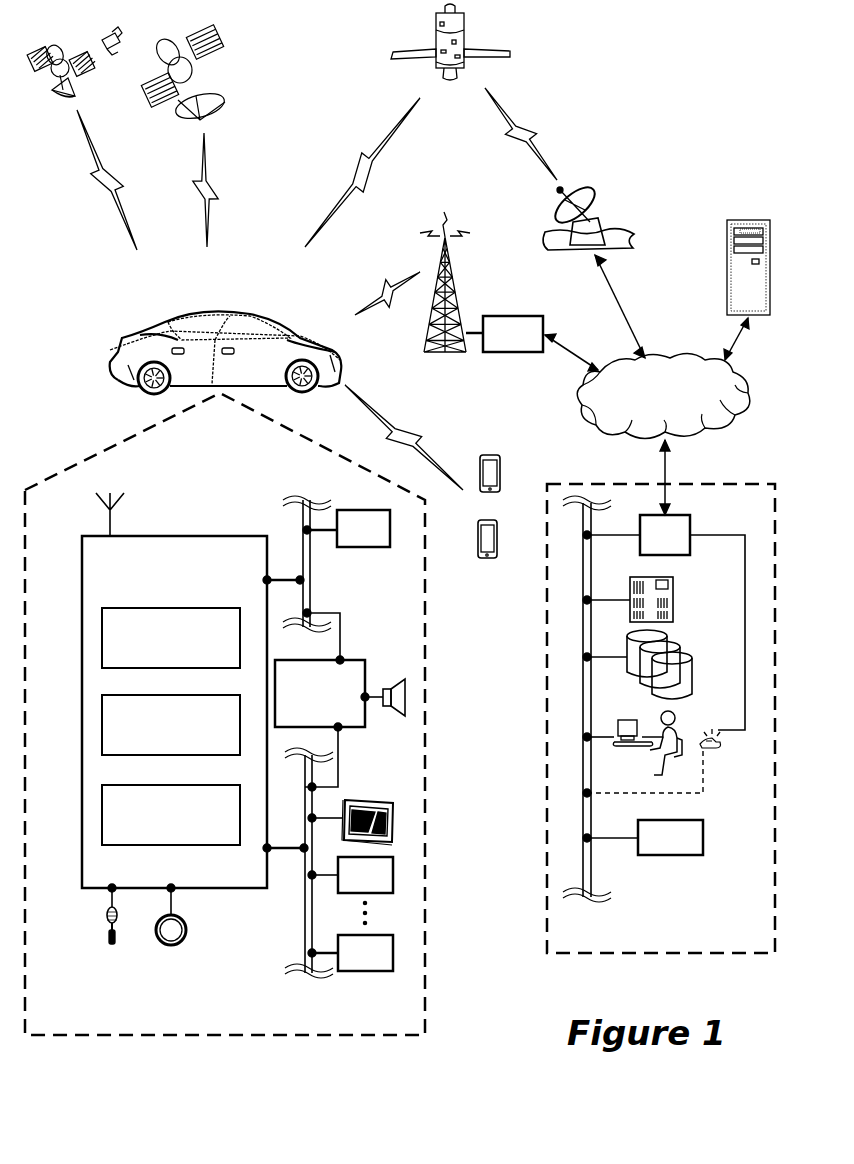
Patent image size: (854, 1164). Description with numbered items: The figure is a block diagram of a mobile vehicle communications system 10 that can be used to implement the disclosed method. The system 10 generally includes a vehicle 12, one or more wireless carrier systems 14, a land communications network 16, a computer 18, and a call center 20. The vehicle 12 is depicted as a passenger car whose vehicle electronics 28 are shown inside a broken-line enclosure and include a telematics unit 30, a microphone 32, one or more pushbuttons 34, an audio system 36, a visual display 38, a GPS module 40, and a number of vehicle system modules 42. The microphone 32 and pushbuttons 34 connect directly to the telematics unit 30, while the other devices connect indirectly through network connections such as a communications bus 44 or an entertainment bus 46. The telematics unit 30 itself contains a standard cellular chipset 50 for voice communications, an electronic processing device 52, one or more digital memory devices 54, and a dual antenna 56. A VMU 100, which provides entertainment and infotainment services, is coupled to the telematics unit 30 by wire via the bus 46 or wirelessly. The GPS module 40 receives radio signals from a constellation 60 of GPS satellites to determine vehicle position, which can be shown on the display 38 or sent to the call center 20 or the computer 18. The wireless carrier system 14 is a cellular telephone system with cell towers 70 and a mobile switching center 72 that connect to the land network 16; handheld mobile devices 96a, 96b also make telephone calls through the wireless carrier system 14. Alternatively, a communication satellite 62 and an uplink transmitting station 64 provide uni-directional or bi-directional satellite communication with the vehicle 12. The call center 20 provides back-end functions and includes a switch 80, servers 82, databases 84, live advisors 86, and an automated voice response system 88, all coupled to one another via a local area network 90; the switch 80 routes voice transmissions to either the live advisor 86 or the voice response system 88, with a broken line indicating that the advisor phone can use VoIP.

The mobile vehicle communications system 10 is at (674, 56).
The vehicle 12 is at (112, 368).
The wireless carrier system 14 is at (432, 360).
The land communications network 16 is at (752, 398).
The computer 18 is at (770, 280).
The call center 20 is at (650, 955).
The vehicle electronics 28 is at (212, 1036).
The telematics unit 30 is at (195, 692).
The microphone 32 is at (104, 923).
The pushbutton 34 is at (188, 925).
The audio system 36 is at (352, 650).
The visual display 38 is at (363, 798).
The GPS module 40 is at (394, 880).
The vehicle system module 42 is at (355, 972).
The communications bus 44 is at (303, 918).
The entertainment bus 46 is at (312, 590).
The cellular chipset 50 is at (171, 638).
The electronic processing device 52 is at (171, 725).
The digital memory device 54 is at (171, 815).
The dual antenna 56 is at (105, 525).
The constellation of GPS satellites 60 is at (250, 92).
The communication satellite 62 is at (466, 22).
The uplink transmitting station 64 is at (608, 230).
The cell tower 70 is at (455, 283).
The mobile switching center 72 is at (515, 316).
The switch 80 is at (664, 622).
The server 82 is at (675, 600).
The database 84 is at (690, 676).
The live advisor 86 is at (655, 758).
The automated voice response system 88 is at (704, 836).
The local area network 90 is at (592, 878).
The mobile device 96a is at (502, 458).
The mobile device 96b is at (499, 523).
The vehicle monitoring unit 100 is at (391, 538).